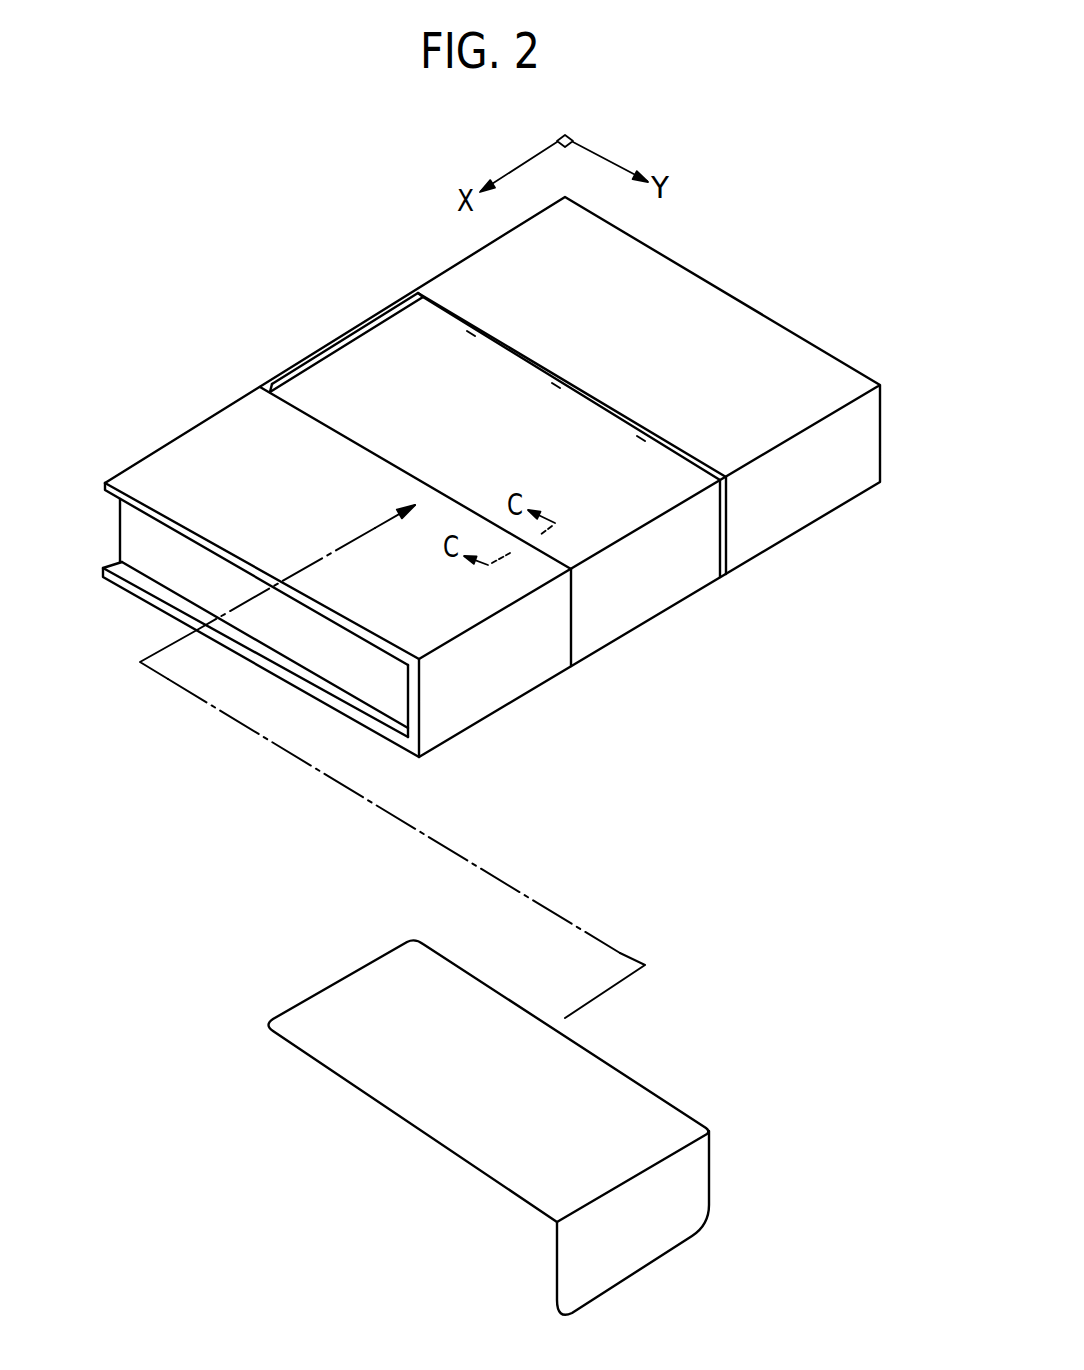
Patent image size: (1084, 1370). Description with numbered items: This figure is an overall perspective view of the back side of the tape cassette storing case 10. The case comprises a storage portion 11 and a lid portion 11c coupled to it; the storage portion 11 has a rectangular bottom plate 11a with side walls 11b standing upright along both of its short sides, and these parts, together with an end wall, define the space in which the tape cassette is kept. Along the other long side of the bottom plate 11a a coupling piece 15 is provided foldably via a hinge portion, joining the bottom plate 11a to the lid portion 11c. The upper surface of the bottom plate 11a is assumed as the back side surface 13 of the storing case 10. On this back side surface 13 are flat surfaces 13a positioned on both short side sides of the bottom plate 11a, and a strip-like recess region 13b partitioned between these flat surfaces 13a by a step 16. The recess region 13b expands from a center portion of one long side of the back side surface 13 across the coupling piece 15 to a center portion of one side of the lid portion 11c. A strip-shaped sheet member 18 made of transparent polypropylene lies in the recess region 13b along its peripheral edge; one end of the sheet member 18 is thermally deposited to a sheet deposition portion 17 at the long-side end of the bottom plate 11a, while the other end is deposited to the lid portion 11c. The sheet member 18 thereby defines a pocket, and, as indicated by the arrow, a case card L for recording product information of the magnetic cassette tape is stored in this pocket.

The storing case 10 is at (240, 332).
The storage portion 11 is at (698, 272).
The bottom plate 11a is at (207, 463).
The side walls 11b is at (133, 538).
The lid portion 11c is at (165, 609).
The back side surface 13 is at (748, 357).
The flat surfaces 13a is at (557, 553).
The recess region 13b is at (307, 323).
The coupling piece 15 is at (527, 656).
The step 16 is at (460, 328).
The sheet deposition portion 17 is at (338, 346).
The sheet member 18 is at (317, 388).
The case card L is at (607, 1118).